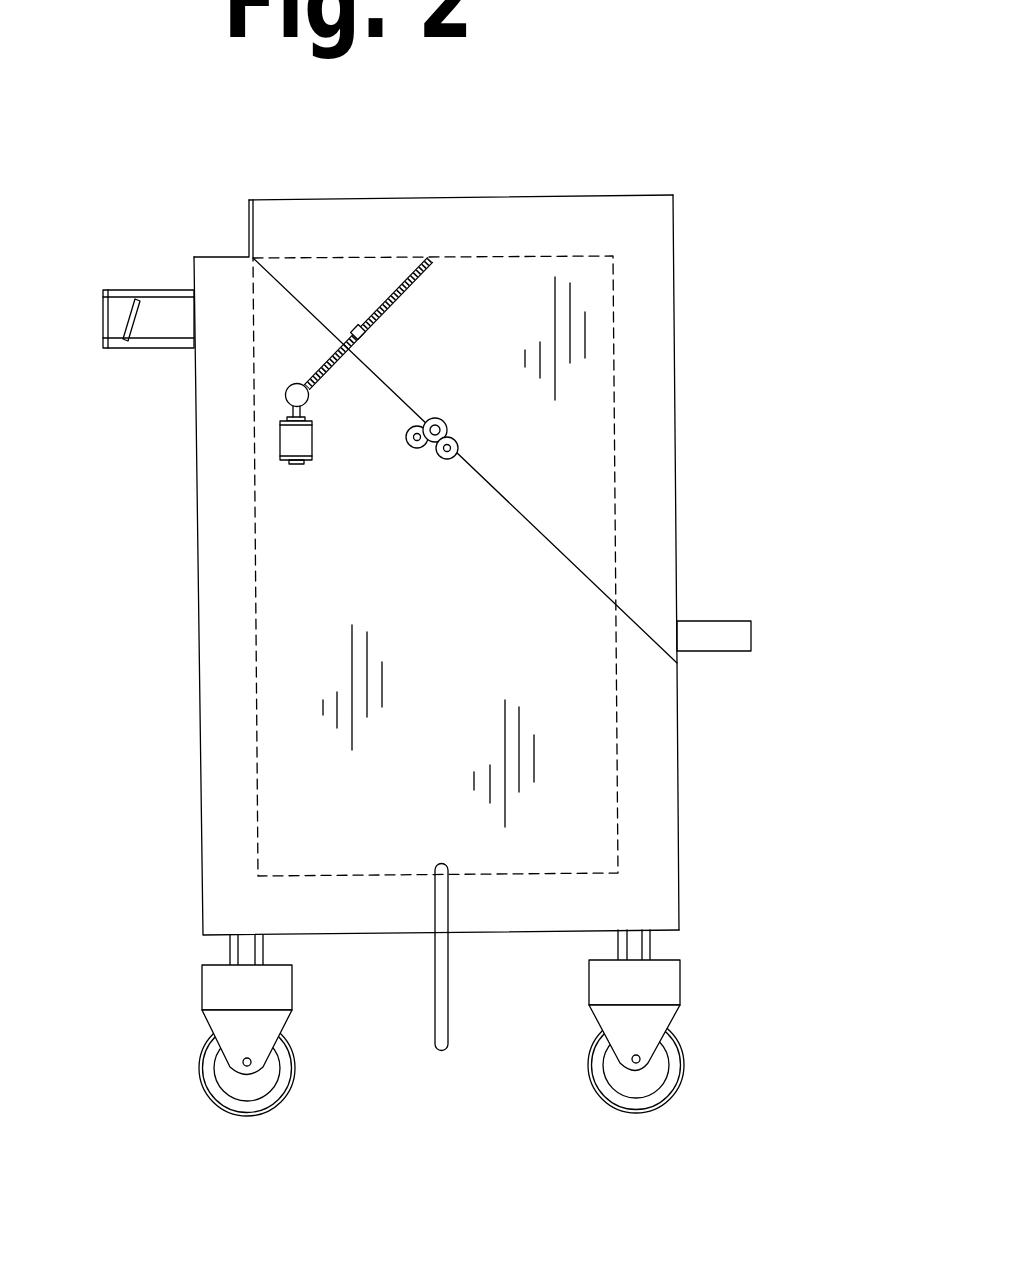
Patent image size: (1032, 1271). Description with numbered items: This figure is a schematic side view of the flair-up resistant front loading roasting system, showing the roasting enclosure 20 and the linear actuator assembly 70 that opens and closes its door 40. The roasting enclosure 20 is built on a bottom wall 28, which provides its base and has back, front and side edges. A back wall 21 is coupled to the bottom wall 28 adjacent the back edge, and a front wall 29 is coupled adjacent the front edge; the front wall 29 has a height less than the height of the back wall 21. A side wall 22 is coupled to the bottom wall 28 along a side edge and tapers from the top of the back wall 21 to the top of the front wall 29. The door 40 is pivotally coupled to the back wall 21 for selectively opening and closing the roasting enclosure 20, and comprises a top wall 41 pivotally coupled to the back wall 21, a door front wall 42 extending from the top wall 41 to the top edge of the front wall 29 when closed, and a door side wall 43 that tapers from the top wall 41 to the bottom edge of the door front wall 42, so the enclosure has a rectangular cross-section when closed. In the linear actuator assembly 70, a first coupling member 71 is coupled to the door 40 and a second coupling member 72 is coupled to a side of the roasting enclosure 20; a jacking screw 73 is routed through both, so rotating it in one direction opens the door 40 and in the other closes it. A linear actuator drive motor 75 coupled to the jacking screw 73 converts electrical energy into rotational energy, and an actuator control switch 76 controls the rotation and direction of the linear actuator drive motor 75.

The roasting enclosure 20 is at (695, 875).
The back wall 21 is at (180, 747).
The side wall 22 is at (440, 830).
The bottom wall 28 is at (362, 948).
The front wall 29 is at (690, 773).
The door 40 is at (702, 215).
The top wall 41 is at (433, 187).
The door front wall 42 is at (673, 377).
The door side wall 43 is at (580, 475).
The linear actuator assembly 70 is at (279, 447).
The first coupling member 71 is at (286, 393).
The second coupling member 72 is at (350, 333).
The jacking screw 73 is at (352, 322).
The linear actuator drive motor 75 is at (311, 440).
The actuator control switch 76 is at (295, 466).